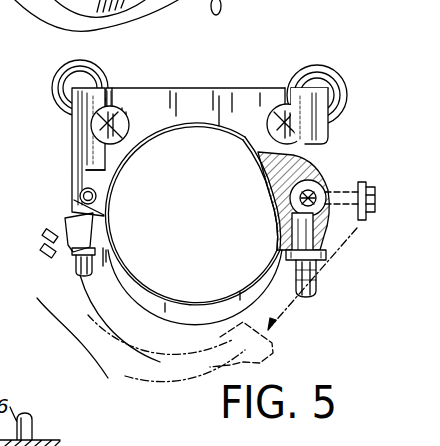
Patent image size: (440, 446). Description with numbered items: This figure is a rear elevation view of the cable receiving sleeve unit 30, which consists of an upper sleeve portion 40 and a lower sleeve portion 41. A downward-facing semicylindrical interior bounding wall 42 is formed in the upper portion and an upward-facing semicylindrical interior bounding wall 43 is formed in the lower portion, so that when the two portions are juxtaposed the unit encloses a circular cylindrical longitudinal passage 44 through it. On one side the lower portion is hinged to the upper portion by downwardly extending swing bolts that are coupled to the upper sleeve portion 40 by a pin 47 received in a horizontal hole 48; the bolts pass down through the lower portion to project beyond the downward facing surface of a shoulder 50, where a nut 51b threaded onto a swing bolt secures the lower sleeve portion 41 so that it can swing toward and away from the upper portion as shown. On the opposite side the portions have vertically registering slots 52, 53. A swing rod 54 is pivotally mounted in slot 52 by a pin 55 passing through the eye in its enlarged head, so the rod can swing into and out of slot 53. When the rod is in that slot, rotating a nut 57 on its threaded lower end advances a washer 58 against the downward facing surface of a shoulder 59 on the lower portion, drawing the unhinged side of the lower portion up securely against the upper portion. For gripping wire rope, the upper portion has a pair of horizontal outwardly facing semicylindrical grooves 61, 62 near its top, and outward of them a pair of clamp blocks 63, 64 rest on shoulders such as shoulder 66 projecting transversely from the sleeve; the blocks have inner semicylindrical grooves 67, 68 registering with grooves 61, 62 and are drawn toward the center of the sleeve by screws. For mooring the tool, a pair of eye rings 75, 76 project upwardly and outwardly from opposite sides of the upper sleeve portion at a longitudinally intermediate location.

The cable receiving sleeve unit 30 is at (316, 48).
The upper sleeve portion 40 is at (185, 88).
The lower sleeve portion 41 is at (153, 312).
The downward-facing semicylindrical interior bounding wall 42 is at (181, 129).
The upward-facing semicylindrical interior bounding wall 43 is at (186, 300).
The circular cylindrical longitudinal passage 44 is at (206, 231).
The pin 47 is at (80, 196).
The horizontal hole 48 is at (52, 232).
The shoulder 50 is at (73, 262).
The nut 51b is at (40, 290).
The slot 52 is at (322, 178).
The slot 53 is at (317, 232).
The swing rod 54 is at (327, 252).
The pin 55 is at (292, 198).
The nut 57 is at (323, 273).
The washer 58 is at (322, 262).
The shoulder 59 is at (293, 297).
The semicylindrical groove 61 is at (121, 118).
The semicylindrical groove 62 is at (268, 122).
The clamp block 63 is at (99, 90).
The clamp block 64 is at (340, 123).
The shoulder 66 is at (99, 168).
The semicylindrical groove 67 is at (92, 141).
The semicylindrical groove 68 is at (328, 144).
The eye ring 75 is at (327, 68).
The eye ring 76 is at (70, 63).